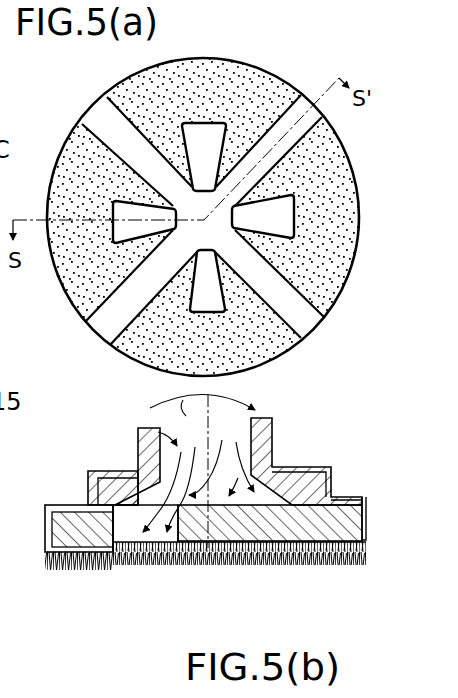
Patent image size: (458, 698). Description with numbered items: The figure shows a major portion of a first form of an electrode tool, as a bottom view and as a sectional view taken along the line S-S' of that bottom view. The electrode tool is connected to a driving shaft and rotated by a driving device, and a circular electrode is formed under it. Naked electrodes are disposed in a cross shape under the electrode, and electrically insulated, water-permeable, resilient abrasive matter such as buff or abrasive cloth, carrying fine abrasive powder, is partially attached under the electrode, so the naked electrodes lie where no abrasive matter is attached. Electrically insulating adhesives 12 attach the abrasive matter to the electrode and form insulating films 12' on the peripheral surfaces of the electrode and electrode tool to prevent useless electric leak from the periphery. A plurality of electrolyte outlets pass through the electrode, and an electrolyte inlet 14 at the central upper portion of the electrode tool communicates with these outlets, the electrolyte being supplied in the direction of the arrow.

The electrically insulating adhesives 12 is at (79, 562).
The insulating films 12' is at (76, 483).
The electrolyte inlet 14 is at (160, 446).